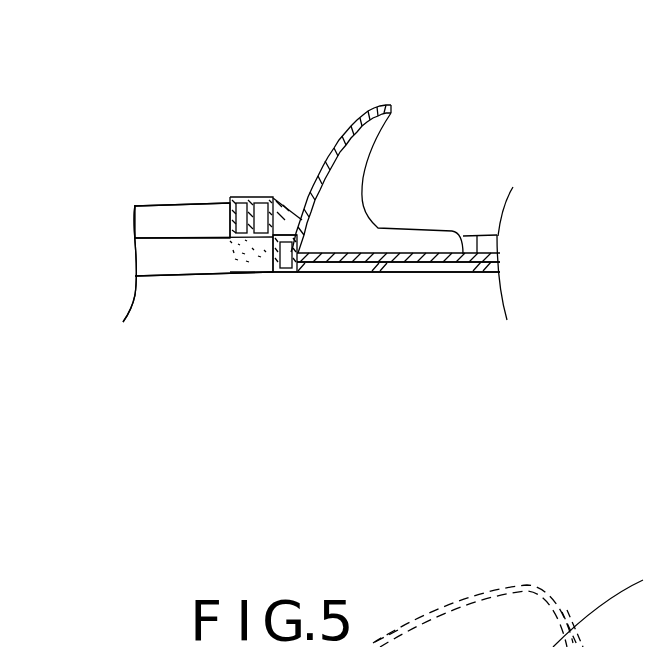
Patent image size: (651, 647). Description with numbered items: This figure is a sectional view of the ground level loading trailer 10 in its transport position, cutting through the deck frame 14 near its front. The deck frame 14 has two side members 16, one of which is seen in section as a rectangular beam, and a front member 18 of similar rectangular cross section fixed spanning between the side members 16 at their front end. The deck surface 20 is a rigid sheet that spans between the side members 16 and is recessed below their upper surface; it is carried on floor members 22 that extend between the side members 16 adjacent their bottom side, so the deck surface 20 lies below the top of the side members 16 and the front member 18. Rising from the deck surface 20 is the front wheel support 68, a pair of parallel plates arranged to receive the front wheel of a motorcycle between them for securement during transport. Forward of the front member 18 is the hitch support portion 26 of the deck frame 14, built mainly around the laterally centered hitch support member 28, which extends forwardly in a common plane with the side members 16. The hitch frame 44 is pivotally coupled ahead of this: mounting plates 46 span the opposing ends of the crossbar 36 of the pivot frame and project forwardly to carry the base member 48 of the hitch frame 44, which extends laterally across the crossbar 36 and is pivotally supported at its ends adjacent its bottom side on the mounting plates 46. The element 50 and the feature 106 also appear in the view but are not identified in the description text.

The ground level loading trailer 10 is at (523, 586).
The deck frame 14 is at (438, 280).
The side members 16 is at (478, 236).
The front member 18 is at (283, 275).
The deck surface 20 is at (347, 275).
The floor members 22 is at (383, 275).
The hitch support portion 26 is at (179, 305).
The hitch support member 28 is at (157, 262).
The crossbar 36 is at (263, 197).
The hitch frame 44 is at (165, 192).
The mounting plates 46 is at (287, 197).
The base member 48 is at (233, 198).
The cover layer 50 is at (198, 217).
The front wheel support 68 is at (363, 157).
The rim 106 is at (398, 630).